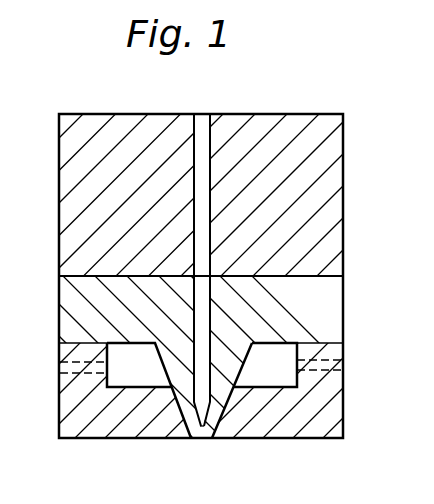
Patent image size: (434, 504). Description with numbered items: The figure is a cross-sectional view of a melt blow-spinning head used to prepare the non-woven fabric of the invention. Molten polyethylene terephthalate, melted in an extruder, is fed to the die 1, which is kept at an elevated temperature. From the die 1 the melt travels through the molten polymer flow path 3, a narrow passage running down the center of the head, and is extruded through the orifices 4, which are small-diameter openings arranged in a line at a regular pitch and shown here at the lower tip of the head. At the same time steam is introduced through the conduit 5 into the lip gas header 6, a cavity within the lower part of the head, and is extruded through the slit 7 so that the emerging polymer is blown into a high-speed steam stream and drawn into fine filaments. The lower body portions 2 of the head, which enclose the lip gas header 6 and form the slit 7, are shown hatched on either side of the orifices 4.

The die 1 is at (337, 313).
The lower plate 2 is at (67, 413).
The molten polymer flow path 3 is at (203, 143).
The orifices 4 is at (202, 428).
The conduit 5 is at (340, 367).
The lip gas header 6 is at (120, 356).
The slit 7 is at (183, 430).